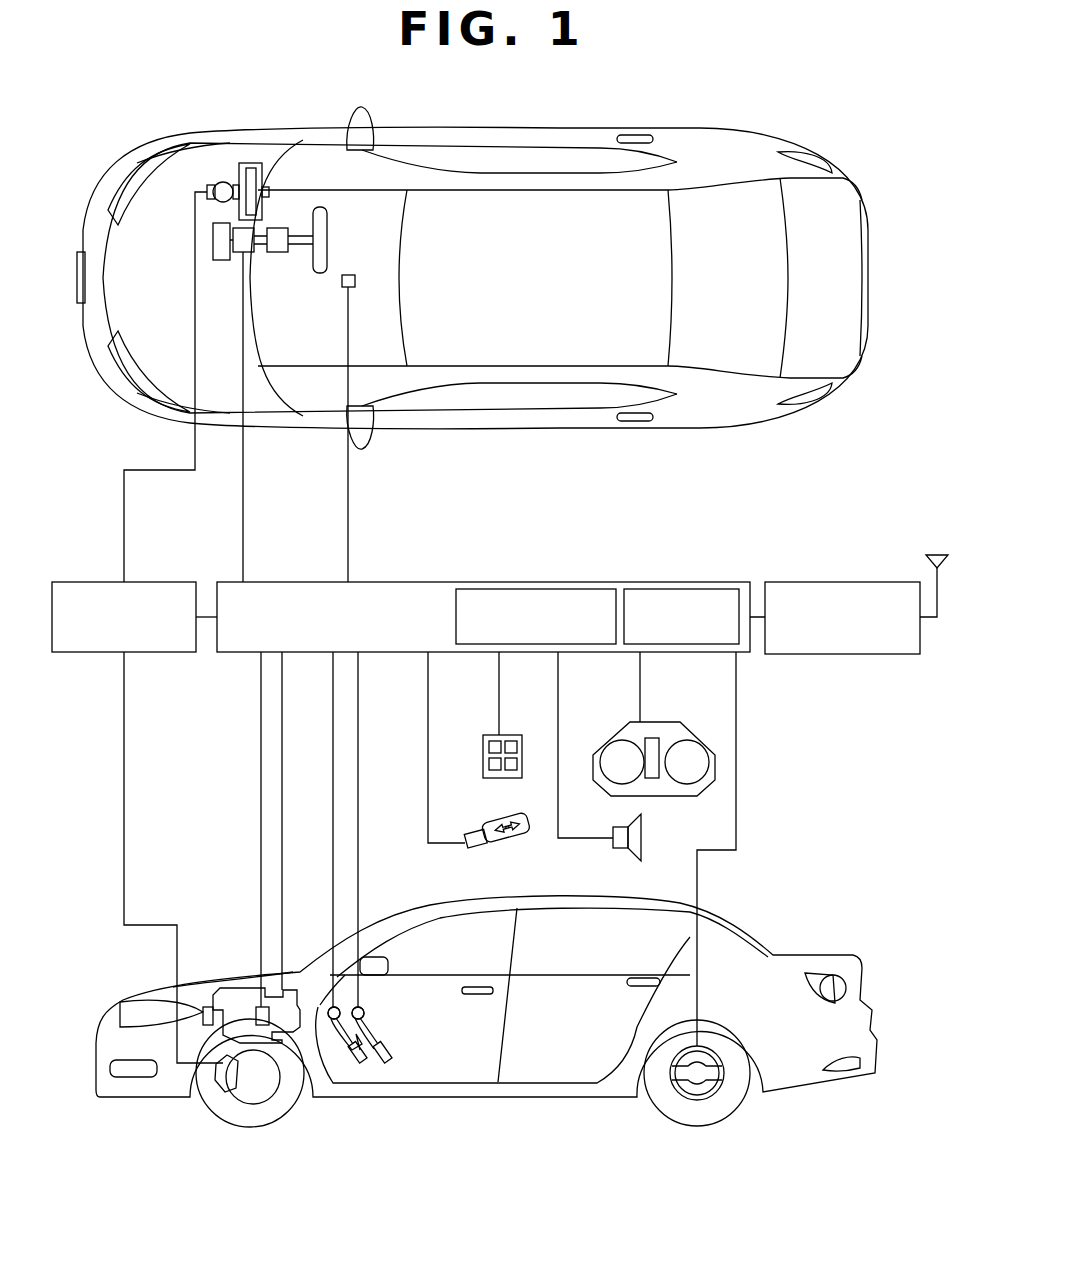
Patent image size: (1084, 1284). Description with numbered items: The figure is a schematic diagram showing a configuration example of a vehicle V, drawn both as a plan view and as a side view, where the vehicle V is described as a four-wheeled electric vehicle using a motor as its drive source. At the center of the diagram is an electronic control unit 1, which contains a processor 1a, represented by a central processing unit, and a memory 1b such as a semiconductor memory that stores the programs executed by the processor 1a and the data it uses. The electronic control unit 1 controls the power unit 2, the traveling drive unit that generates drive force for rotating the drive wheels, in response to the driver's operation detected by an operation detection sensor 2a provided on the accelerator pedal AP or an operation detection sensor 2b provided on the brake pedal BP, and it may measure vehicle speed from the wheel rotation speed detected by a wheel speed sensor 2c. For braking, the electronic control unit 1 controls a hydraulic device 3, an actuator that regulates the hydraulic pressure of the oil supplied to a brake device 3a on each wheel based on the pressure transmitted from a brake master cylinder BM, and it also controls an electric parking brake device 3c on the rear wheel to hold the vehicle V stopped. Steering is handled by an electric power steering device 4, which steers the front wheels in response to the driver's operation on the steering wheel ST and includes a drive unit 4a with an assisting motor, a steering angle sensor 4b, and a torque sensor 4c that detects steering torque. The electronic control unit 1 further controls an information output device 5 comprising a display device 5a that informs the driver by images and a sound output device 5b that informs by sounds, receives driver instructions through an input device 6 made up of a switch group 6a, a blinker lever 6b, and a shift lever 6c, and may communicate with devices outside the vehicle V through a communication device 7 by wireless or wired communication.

The electronic control unit 1 is at (483, 584).
The processor 1a is at (535, 589).
The memory 1b is at (680, 589).
The power unit 2 is at (260, 902).
The operation detection sensor 2a is at (332, 1007).
The operation detection sensor 2b is at (364, 1011).
The wheel speed sensor 2c is at (258, 1005).
The hydraulic device 3 is at (92, 582).
The brake device 3a is at (218, 1093).
The electric parking brake device 3c is at (683, 1100).
The electric power steering device 4 is at (239, 337).
The drive unit 4a is at (250, 252).
The steering angle sensor 4b is at (210, 223).
The torque sensor 4c is at (278, 228).
The brake master cylinder BM is at (225, 180).
The steering wheel ST is at (327, 210).
The information output device 5 is at (640, 756).
The display device 5a is at (613, 740).
The sound output device 5b is at (612, 835).
The input device 6 is at (488, 750).
The switch group 6a is at (482, 745).
The blinker lever 6b is at (480, 836).
The shift lever 6c is at (357, 280).
The communication device 7 is at (852, 654).
The vehicle V is at (880, 182).
The accelerator pedal AP is at (362, 1058).
The brake pedal BP is at (385, 1060).